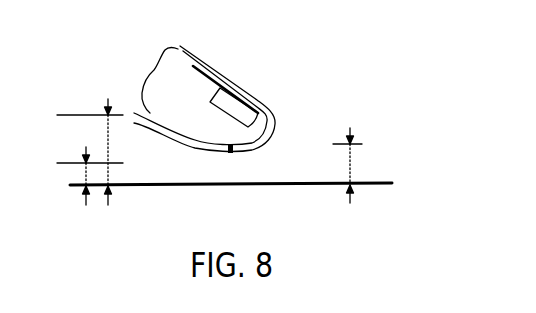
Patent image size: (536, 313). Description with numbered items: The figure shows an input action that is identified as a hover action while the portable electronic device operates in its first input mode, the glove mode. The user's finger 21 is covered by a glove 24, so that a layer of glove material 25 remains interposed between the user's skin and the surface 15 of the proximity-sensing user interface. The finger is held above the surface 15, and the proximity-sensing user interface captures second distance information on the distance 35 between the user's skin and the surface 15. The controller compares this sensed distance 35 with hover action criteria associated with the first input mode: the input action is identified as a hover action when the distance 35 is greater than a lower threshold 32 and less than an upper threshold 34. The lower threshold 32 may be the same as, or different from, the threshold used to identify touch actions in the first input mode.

The surface 15 is at (372, 183).
The user's finger 21 is at (154, 70).
The glove 24 is at (220, 73).
The layer of glove material 25 is at (231, 152).
The lower threshold 32 is at (86, 176).
The upper threshold 34 is at (108, 133).
The distance 35 is at (349, 162).